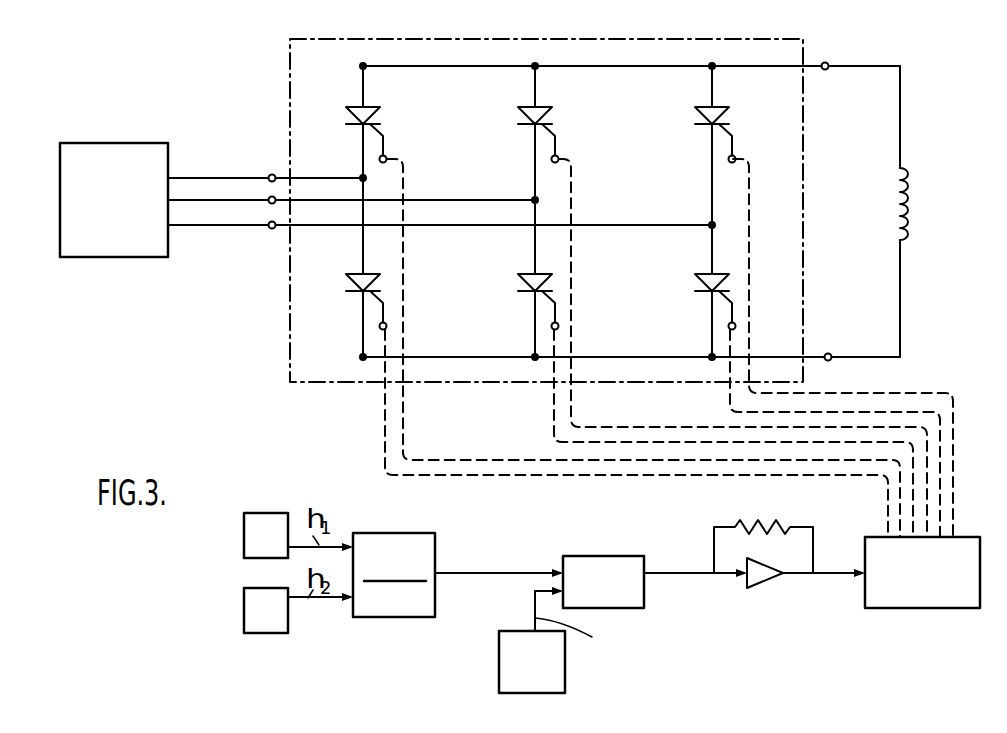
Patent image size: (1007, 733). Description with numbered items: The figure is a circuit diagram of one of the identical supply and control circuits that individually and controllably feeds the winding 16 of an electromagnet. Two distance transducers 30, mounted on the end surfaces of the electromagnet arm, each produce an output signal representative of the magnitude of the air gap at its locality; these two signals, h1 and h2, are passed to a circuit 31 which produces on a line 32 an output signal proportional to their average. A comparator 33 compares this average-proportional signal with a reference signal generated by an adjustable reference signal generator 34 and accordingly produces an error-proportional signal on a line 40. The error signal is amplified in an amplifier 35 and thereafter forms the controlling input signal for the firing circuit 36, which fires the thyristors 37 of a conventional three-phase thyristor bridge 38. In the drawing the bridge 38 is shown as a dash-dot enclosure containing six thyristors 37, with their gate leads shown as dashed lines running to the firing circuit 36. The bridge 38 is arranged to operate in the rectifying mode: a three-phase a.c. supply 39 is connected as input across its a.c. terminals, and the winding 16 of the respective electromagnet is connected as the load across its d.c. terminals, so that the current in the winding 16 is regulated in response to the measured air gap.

The winding 16 is at (908, 229).
The distance transducer 30 is at (281, 551).
The circuit 31 is at (420, 618).
The line 32 is at (440, 568).
The comparator 33 is at (577, 563).
The adjustable reference signal generator 34 is at (499, 672).
The amplifier 35 is at (817, 608).
The firing circuit 36 is at (948, 608).
The thyristors 37 is at (528, 108).
The three-phase thyristor bridge 38 is at (462, 38).
The three-phase a.c. supply 39 is at (168, 250).
The line 40 is at (658, 565).